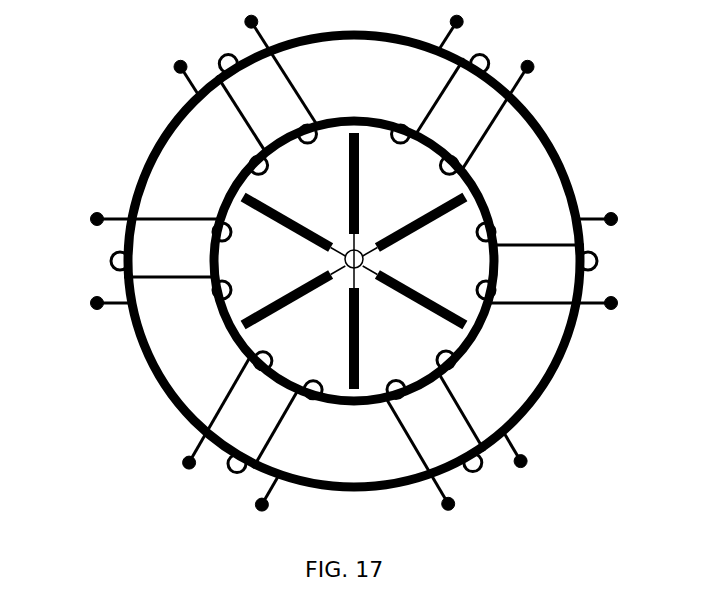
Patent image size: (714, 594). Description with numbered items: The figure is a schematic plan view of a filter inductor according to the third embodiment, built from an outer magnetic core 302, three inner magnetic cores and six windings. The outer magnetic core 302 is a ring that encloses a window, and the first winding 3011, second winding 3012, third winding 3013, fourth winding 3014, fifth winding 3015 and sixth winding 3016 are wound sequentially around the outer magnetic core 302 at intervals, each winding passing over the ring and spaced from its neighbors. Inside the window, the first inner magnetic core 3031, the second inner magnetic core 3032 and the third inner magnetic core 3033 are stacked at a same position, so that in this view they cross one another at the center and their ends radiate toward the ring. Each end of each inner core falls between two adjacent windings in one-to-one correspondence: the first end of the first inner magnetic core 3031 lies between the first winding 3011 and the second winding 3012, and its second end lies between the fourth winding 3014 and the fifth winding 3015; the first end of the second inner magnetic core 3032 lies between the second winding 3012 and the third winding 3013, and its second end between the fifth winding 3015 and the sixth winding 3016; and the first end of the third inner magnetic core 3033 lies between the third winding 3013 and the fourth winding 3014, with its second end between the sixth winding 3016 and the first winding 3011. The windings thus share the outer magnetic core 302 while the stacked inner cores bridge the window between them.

The first winding 3011 is at (183, 80).
The second winding 3012 is at (520, 85).
The third winding 3013 is at (592, 216).
The fourth winding 3014 is at (518, 450).
The fifth winding 3015 is at (192, 447).
The sixth winding 3016 is at (110, 300).
The outer magnetic core 302 is at (572, 349).
The first inner magnetic core 3031 is at (360, 175).
The second inner magnetic core 3032 is at (402, 240).
The third inner magnetic core 3033 is at (422, 308).